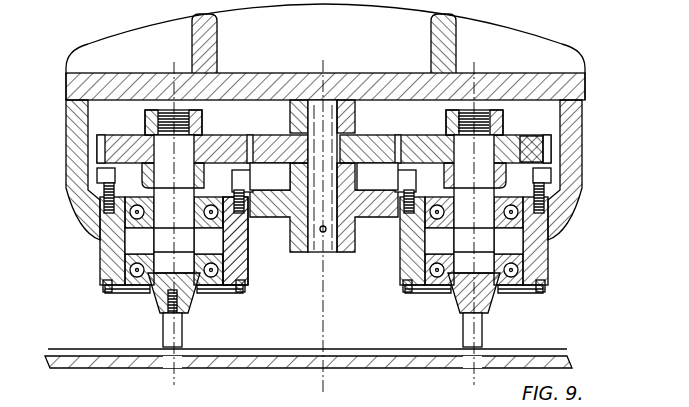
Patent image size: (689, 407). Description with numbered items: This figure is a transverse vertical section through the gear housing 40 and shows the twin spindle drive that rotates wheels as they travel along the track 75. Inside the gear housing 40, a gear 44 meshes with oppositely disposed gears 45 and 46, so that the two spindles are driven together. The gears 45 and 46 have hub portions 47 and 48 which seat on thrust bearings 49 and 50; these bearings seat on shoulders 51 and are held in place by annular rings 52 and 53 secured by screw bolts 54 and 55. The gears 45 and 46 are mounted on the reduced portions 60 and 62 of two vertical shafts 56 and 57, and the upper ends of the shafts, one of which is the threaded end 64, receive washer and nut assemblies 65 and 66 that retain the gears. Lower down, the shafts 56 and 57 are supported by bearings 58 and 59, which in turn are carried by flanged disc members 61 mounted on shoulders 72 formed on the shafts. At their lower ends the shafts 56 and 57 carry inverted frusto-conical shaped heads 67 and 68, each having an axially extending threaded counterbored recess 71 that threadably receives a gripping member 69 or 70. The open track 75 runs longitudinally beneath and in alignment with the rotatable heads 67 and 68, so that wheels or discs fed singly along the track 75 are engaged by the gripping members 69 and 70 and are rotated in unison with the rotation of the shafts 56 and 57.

The gear housing 40 is at (66, 155).
The gear 44 is at (362, 144).
The gear 45 is at (235, 140).
The gear 46 is at (518, 138).
The hub portion 47 is at (147, 181).
The hub portion 48 is at (550, 226).
The thrust bearing 49 is at (208, 241).
The thrust bearing 50 is at (439, 241).
The shoulder 51 is at (127, 247).
The annular ring 52 is at (102, 180).
The annular ring 53 is at (557, 190).
The screw bolt 54 is at (125, 196).
The screw bolt 55 is at (588, 213).
The shaft 56 is at (130, 293).
The shaft 57 is at (423, 243).
The bearing 58 is at (250, 270).
The bearing 59 is at (410, 288).
The reduced portion 60 is at (190, 173).
The flanged disc member 61 is at (110, 292).
The reduced portion 62 is at (485, 176).
The threaded end 64 is at (167, 113).
The washer and nut assembly 65 is at (145, 122).
The washer and nut assembly 66 is at (446, 121).
The inverted frusto-conical head 67 is at (154, 300).
The inverted frusto-conical head 68 is at (461, 318).
The gripping member 69 is at (183, 338).
The gripping member 70 is at (487, 339).
The threaded counterbored recess 71 is at (178, 303).
The shoulder 72 is at (198, 296).
The track 75 is at (291, 355).